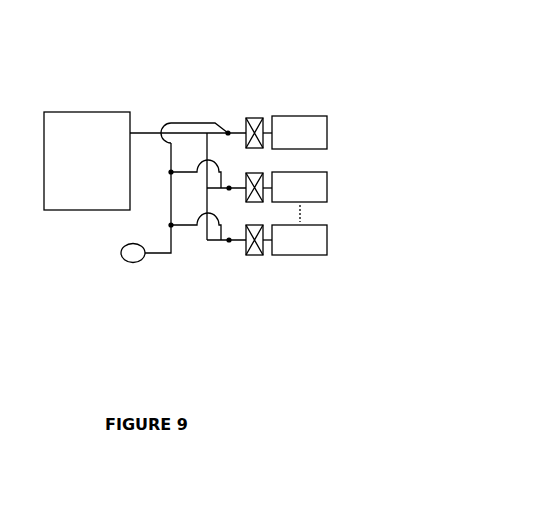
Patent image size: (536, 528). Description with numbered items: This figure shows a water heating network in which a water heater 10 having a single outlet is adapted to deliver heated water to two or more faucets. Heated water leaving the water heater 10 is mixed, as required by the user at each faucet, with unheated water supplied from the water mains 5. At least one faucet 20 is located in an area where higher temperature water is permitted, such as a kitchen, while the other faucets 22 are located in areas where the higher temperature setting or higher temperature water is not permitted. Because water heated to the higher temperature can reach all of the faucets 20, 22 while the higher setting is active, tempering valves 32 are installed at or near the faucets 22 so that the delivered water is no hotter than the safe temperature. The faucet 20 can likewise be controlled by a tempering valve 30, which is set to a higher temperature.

The water heater 10 is at (87, 112).
The tempering valve 30 is at (248, 120).
The faucet 20 is at (330, 125).
The tempering valves 32 is at (253, 174).
The faucets 22 is at (330, 190).
The water mains 5 is at (127, 262).